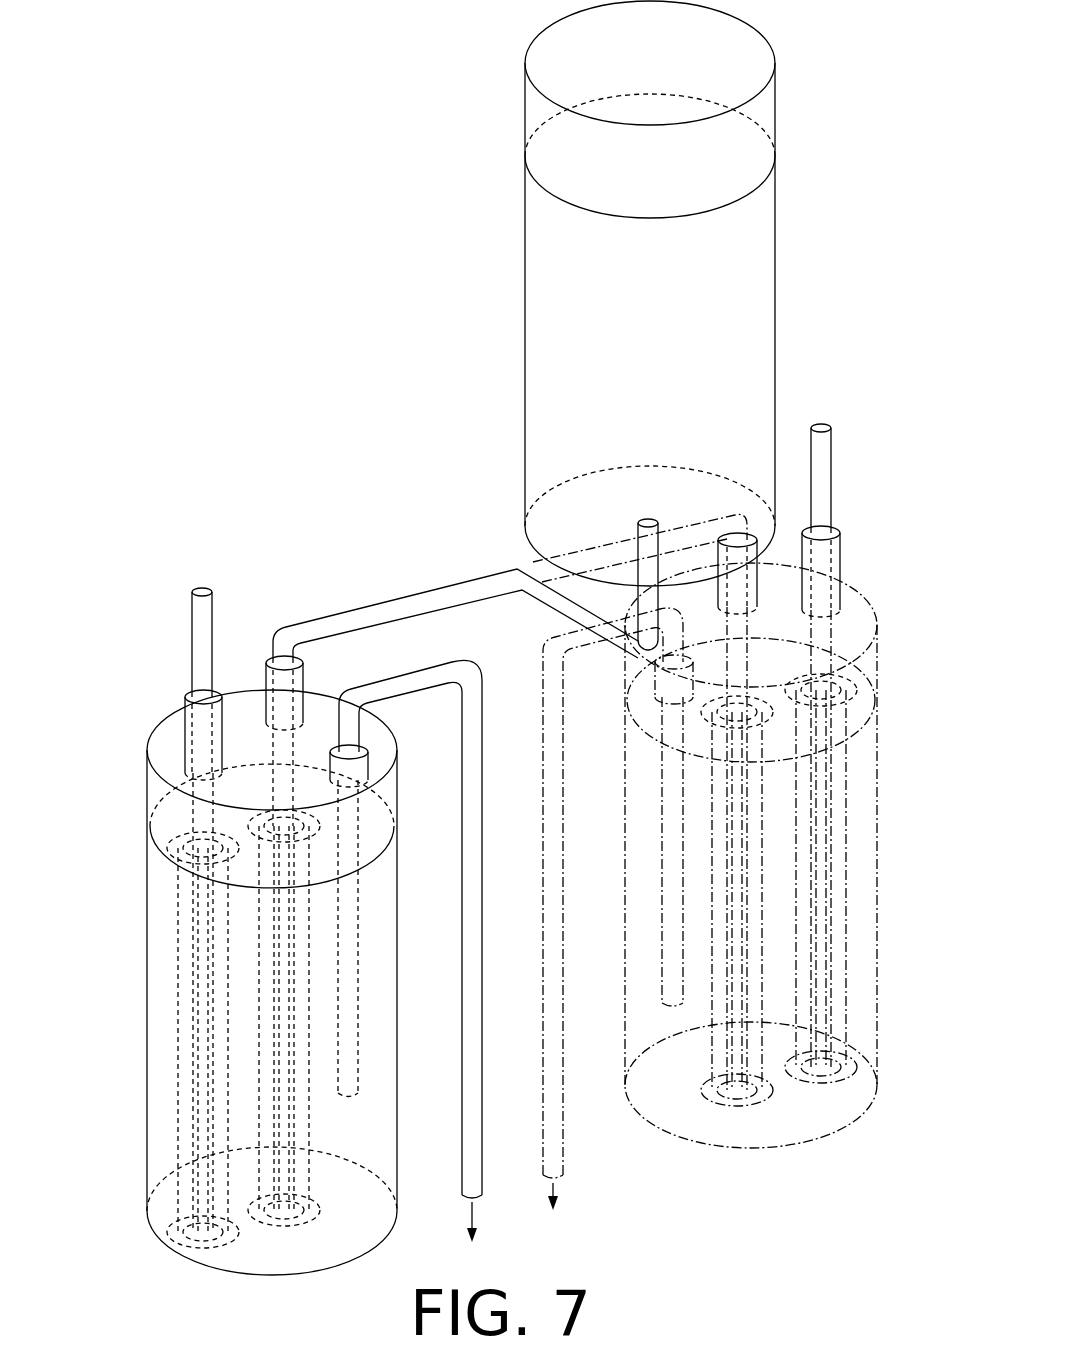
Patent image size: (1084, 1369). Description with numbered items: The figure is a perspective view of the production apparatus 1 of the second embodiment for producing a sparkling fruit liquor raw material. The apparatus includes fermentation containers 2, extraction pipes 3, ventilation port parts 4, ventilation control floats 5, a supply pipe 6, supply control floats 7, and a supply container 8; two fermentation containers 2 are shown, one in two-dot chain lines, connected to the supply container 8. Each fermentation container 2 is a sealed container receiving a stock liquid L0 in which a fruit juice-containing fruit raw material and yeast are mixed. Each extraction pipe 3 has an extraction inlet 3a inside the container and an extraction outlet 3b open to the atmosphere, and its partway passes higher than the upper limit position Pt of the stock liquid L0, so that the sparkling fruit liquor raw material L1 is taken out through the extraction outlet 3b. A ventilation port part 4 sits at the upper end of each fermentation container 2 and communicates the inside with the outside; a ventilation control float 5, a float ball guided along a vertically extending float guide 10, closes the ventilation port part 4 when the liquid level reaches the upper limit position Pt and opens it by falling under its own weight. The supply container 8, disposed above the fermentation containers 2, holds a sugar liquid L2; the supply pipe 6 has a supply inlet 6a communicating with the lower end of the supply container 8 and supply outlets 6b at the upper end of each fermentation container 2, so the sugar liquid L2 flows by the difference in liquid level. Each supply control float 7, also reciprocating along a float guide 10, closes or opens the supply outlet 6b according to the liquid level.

The production apparatus 1 is at (330, 550).
The fermentation container 2 is at (150, 746).
The extraction pipe 3 is at (537, 673).
The extraction inlet 3a is at (366, 1103).
The extraction outlet 3b is at (487, 1200).
The ventilation port part 4 is at (192, 662).
The ventilation control float 5 is at (173, 830).
The supply pipe 6 is at (533, 562).
The supply inlet 6a is at (644, 508).
The supply outlet 6b is at (262, 806).
The supply control float 7 is at (290, 805).
The supply container 8 is at (760, 37).
The float guide 10 is at (220, 1053).
The upper limit position Pt is at (145, 858).
The stock liquid L0 is at (375, 972).
The sparkling fruit liquor raw material L1 is at (515, 1229).
The sugar liquid L2 is at (762, 230).